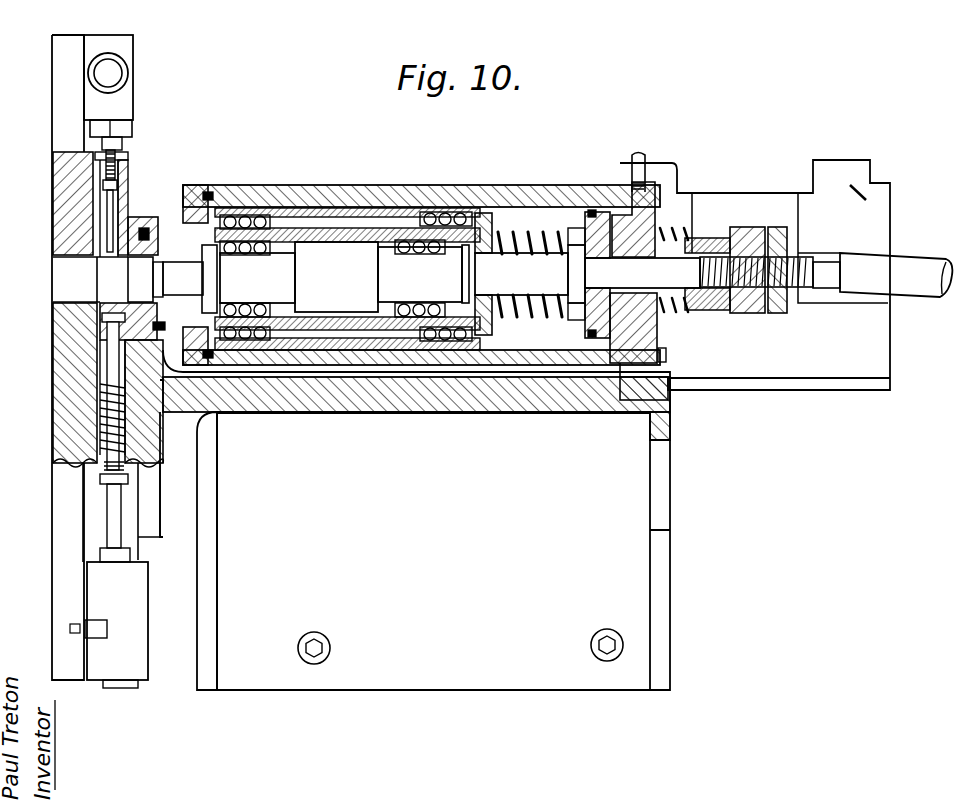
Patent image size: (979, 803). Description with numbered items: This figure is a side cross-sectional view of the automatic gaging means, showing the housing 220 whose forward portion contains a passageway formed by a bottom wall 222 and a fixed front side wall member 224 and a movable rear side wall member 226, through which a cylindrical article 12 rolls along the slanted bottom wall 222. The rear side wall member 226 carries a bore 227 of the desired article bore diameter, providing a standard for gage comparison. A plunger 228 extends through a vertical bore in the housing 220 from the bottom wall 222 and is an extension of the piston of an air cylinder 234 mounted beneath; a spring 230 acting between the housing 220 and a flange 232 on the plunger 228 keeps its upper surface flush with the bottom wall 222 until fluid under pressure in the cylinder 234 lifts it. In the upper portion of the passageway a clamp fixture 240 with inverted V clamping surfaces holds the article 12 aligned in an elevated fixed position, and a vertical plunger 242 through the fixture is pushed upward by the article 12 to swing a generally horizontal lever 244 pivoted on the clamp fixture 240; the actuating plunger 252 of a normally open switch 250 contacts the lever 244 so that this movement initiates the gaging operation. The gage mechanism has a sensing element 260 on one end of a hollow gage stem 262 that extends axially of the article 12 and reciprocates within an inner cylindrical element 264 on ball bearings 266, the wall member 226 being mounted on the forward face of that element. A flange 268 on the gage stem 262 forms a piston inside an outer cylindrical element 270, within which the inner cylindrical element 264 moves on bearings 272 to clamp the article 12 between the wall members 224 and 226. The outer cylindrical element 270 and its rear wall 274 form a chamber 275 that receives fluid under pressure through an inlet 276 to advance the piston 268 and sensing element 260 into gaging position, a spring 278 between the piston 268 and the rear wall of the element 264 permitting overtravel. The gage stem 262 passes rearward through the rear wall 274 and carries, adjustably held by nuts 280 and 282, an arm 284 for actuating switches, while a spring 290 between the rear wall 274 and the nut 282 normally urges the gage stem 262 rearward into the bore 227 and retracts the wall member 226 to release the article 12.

The article 12 is at (100, 262).
The housing 220 is at (253, 188).
The bottom wall 222 is at (92, 346).
The front side wall member 224 is at (100, 336).
The rear side wall member 226 is at (131, 210).
The bore 227 is at (143, 232).
The plunger 228 is at (102, 320).
The spring 230 is at (103, 418).
The flange 232 is at (107, 480).
The air cylinder 234 is at (147, 607).
The clamp fixture 240 is at (92, 249).
The plunger 242 is at (55, 202).
The lever 244 is at (113, 157).
The switch 250 is at (134, 62).
The actuating plunger 252 is at (133, 121).
The sensing element 260 is at (137, 294).
The gage stem 262 is at (272, 288).
The inner cylindrical element 264 is at (322, 226).
The ball bearings 266 is at (275, 243).
The flange 268 is at (577, 232).
The outer cylindrical element 270 is at (607, 178).
The bearings 272 is at (460, 218).
The rear wall 274 is at (655, 198).
The chamber 275 is at (543, 215).
The inlet 276 is at (641, 162).
The spring 278 is at (518, 228).
The nut 280 is at (787, 240).
The nut 282 is at (745, 237).
The arm 284 is at (767, 313).
The spring 290 is at (698, 228).